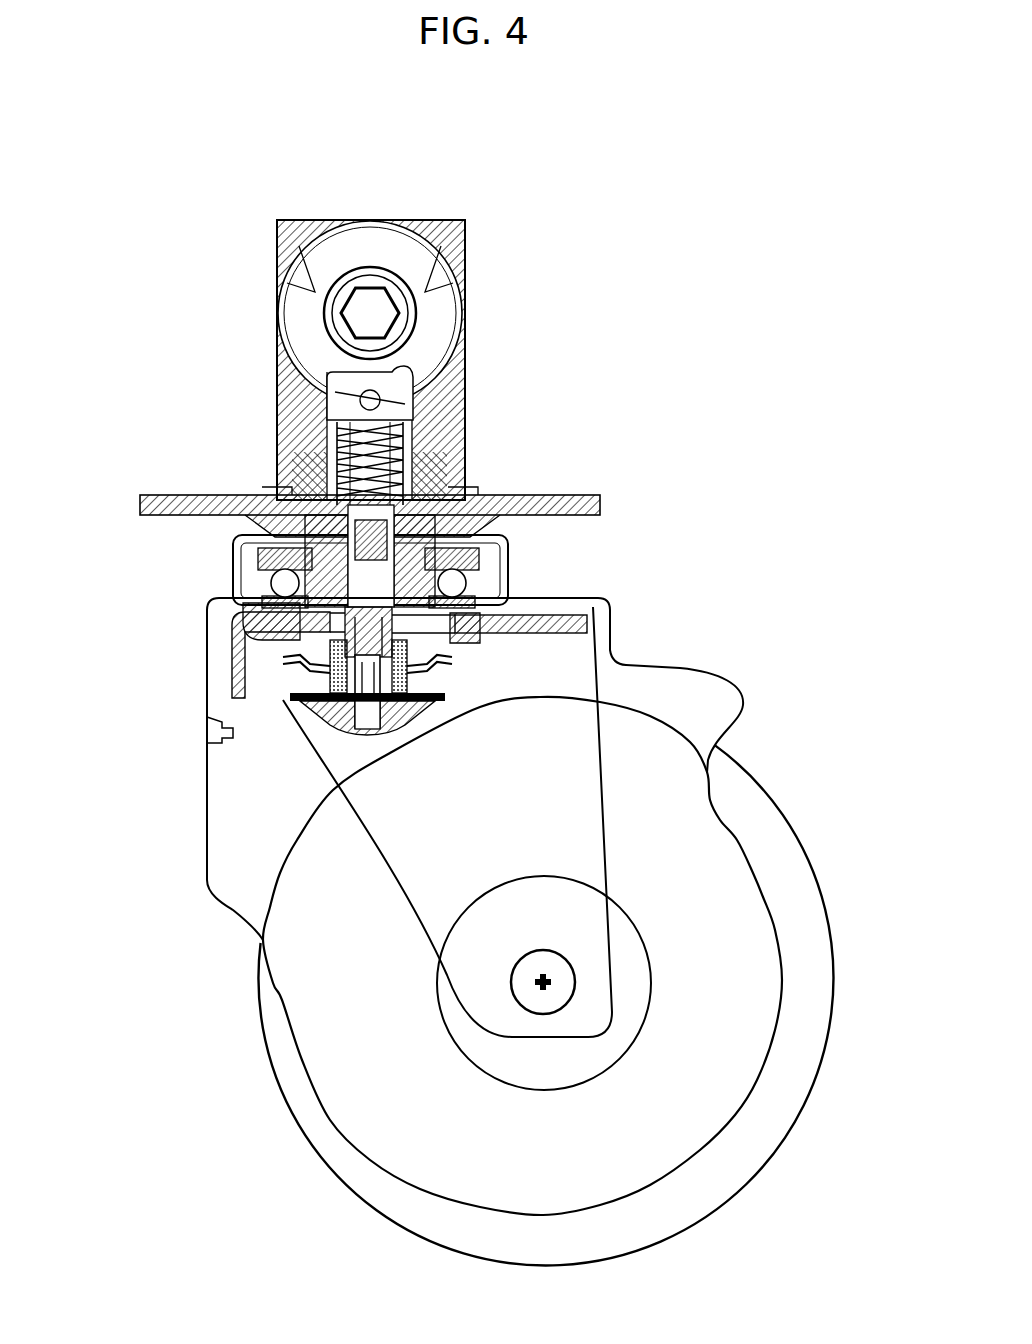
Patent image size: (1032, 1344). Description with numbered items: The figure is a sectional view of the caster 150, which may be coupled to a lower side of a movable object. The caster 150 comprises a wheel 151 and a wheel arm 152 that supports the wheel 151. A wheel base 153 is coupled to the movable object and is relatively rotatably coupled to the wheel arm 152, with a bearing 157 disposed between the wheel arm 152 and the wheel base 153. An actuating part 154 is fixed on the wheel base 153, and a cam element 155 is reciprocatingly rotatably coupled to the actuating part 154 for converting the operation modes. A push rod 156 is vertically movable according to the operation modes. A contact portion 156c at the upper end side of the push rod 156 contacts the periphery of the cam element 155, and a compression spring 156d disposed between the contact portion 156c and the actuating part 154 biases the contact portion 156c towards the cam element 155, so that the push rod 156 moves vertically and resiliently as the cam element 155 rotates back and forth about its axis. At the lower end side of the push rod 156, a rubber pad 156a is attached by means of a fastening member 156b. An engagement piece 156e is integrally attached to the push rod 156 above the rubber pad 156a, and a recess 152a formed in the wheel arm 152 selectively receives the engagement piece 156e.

The caster 150 is at (212, 442).
The wheel 151 is at (790, 865).
The wheel arm 152 is at (572, 788).
The recess 152a is at (612, 600).
The wheel base 153 is at (168, 518).
The actuating part 154 is at (408, 219).
The cam element 155 is at (443, 326).
The push rod 156 is at (376, 584).
The rubber pad 156a is at (330, 720).
The fastening member 156b is at (368, 729).
The contact portion 156c is at (376, 399).
The compression spring 156d is at (440, 474).
The engagement piece 156e is at (290, 667).
The bearing 157 is at (236, 577).